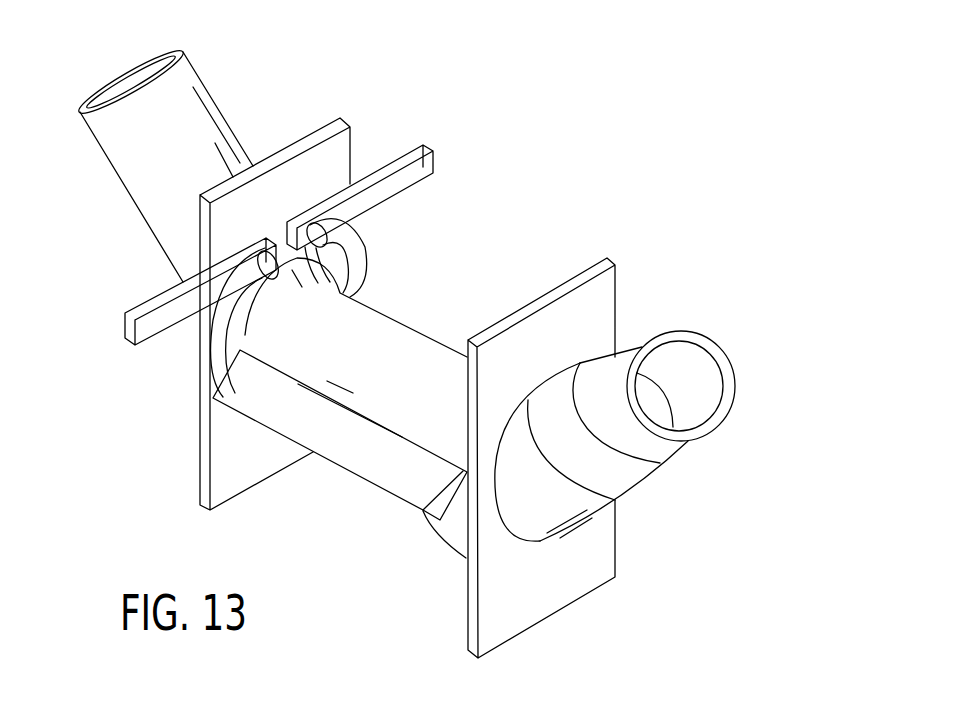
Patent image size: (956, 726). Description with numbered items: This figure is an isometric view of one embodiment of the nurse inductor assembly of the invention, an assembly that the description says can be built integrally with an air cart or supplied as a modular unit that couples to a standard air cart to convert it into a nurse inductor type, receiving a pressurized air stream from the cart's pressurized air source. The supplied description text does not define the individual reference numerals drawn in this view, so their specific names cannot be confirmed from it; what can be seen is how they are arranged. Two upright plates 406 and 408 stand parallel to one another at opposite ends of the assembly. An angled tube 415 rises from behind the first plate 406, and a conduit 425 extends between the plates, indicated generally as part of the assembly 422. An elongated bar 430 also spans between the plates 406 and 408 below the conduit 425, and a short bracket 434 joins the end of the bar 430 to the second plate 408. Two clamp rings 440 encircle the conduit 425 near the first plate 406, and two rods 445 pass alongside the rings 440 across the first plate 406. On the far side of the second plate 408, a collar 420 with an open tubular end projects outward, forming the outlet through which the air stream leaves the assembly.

The first plate 406 is at (222, 473).
The second plate 408 is at (547, 590).
The inlet tube 415 is at (222, 106).
The outlet collar 420 is at (673, 473).
The conduit assembly 422 is at (381, 302).
The conduit tube 425 is at (447, 373).
The support bar 430 is at (363, 452).
The bracket 434 is at (438, 540).
The clamp ring 440 is at (357, 258).
The support rod 445 is at (395, 157).